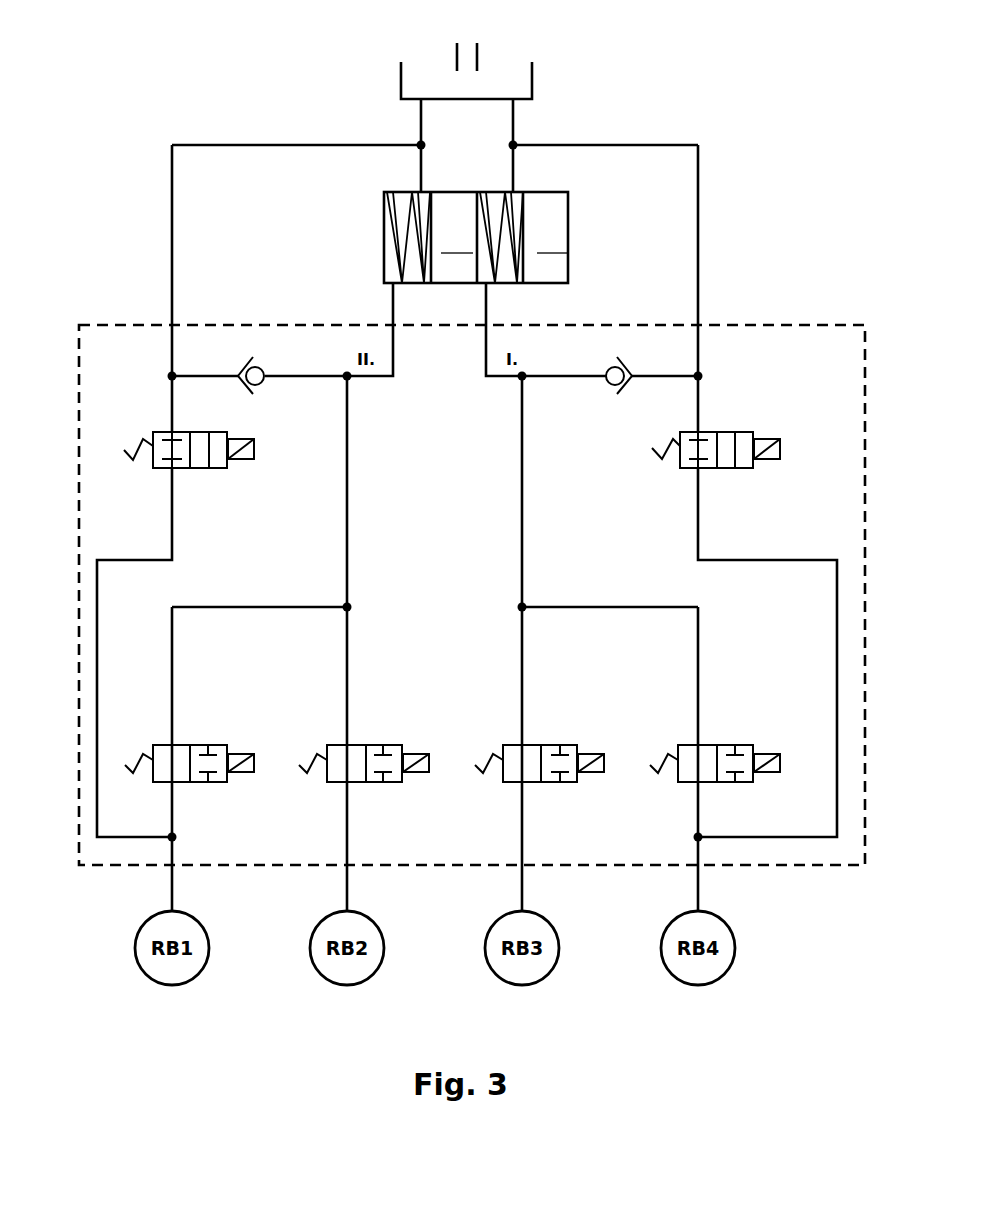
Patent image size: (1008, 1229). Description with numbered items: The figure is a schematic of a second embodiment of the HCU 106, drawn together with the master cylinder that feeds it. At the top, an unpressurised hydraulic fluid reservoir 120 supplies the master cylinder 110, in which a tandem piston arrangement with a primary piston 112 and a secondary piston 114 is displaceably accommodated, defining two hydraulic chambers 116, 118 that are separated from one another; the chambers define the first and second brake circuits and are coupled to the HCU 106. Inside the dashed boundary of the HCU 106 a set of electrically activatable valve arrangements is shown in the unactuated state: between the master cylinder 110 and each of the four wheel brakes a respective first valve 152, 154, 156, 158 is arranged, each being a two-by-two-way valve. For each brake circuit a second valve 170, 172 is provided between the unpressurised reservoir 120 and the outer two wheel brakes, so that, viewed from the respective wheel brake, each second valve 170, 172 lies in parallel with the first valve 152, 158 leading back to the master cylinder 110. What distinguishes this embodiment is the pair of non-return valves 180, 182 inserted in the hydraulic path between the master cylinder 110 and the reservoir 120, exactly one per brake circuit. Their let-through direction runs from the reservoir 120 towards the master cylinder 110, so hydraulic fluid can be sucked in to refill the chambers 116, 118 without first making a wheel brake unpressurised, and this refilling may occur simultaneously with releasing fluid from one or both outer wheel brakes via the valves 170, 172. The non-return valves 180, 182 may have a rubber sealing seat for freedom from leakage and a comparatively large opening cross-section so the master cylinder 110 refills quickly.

The HCU 106 is at (116, 340).
The master cylinder 110 is at (492, 209).
The primary piston 112 is at (554, 243).
The secondary piston 114 is at (458, 243).
The hydraulic chamber 116 is at (503, 207).
The hydraulic chamber 118 is at (393, 227).
The hydraulic fluid reservoir 120 is at (500, 56).
The first valve 152 is at (208, 743).
The first valve 154 is at (383, 743).
The first valve 156 is at (558, 743).
The first valve 158 is at (733, 743).
The second valve 170 is at (200, 470).
The second valve 172 is at (737, 470).
The non-return valve 180 is at (263, 386).
The non-return valve 182 is at (608, 390).